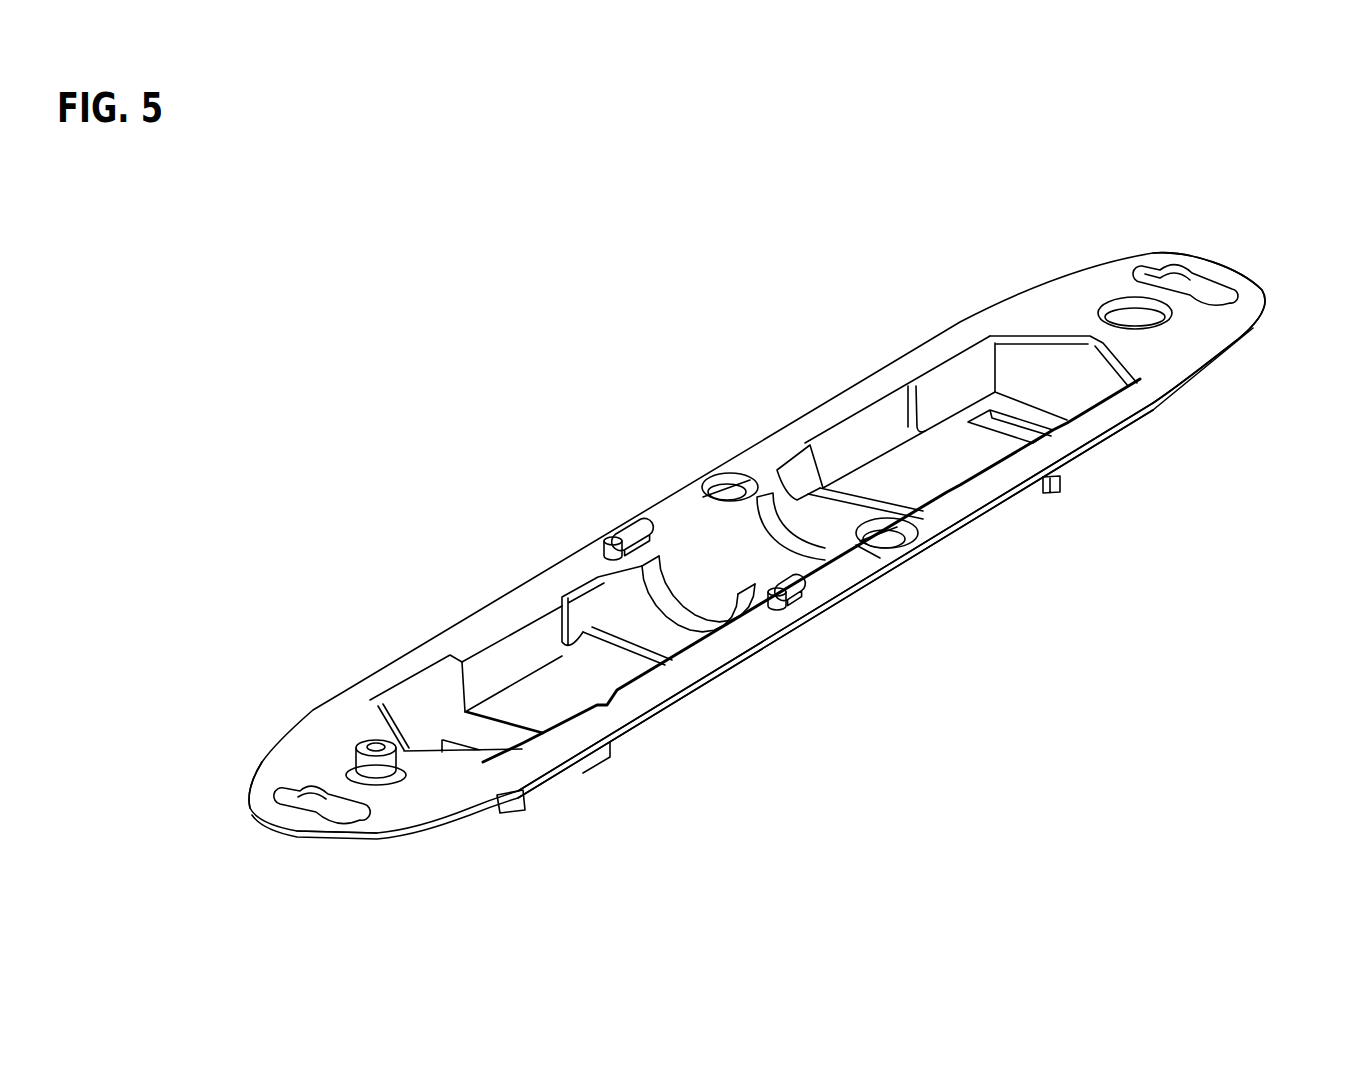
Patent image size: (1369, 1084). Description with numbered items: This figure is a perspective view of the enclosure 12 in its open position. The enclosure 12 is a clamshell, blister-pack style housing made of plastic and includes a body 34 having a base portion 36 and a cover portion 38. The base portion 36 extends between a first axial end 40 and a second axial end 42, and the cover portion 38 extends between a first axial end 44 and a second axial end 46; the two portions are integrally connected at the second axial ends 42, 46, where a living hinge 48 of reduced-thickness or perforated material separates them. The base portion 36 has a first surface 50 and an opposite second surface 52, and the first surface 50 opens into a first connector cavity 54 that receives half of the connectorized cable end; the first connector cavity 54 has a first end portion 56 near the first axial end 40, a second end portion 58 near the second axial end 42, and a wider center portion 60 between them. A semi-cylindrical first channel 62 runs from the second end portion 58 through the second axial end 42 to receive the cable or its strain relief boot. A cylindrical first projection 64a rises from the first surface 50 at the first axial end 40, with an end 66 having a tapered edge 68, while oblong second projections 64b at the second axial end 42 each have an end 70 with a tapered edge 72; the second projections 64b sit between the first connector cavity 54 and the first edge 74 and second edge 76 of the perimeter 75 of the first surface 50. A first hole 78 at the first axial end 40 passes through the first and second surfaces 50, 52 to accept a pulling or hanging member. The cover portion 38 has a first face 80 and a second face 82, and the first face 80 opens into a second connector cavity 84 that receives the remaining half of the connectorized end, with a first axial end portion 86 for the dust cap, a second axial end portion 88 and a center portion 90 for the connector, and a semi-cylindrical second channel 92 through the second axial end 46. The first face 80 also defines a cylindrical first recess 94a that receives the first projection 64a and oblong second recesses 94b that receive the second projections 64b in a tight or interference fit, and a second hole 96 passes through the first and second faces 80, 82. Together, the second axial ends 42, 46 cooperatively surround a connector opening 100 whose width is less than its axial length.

The enclosure 12 is at (415, 383).
The body 34 is at (1103, 248).
The base portion 36 is at (410, 598).
The cover portion 38 is at (852, 345).
The first axial end 40 is at (258, 766).
The second axial end 42 is at (793, 607).
The first axial end 44 is at (1252, 325).
The second axial end 46 is at (920, 542).
The living hinge 48 is at (852, 577).
The first surface 50 is at (333, 718).
The second surface 52 is at (410, 833).
The first connector cavity 54 is at (530, 633).
The first end portion 56 is at (515, 740).
The second end portion 58 is at (677, 643).
The center portion 60 is at (610, 690).
The first channel 62 is at (655, 586).
The first projection 64a is at (397, 767).
The second projections 64b is at (800, 588).
The end 66 is at (373, 743).
The edge 68 is at (360, 753).
The end 70 is at (625, 527).
The edge 72 is at (610, 540).
The first edge 74 is at (770, 638).
The perimeter 75 is at (628, 736).
The second edge 76 is at (567, 560).
The first hole 78 is at (321, 813).
The first face 80 is at (1038, 297).
The second face 82 is at (1180, 398).
The second connector cavity 84 is at (957, 385).
The first axial end portion 86 is at (1083, 380).
The second axial end portion 88 is at (803, 477).
The center portion 90 is at (973, 473).
The second channel 92 is at (785, 521).
The first recess 94a is at (1170, 325).
The second recesses 94b is at (720, 477).
The second hole 96 is at (1190, 275).
The connector opening 100 is at (697, 555).